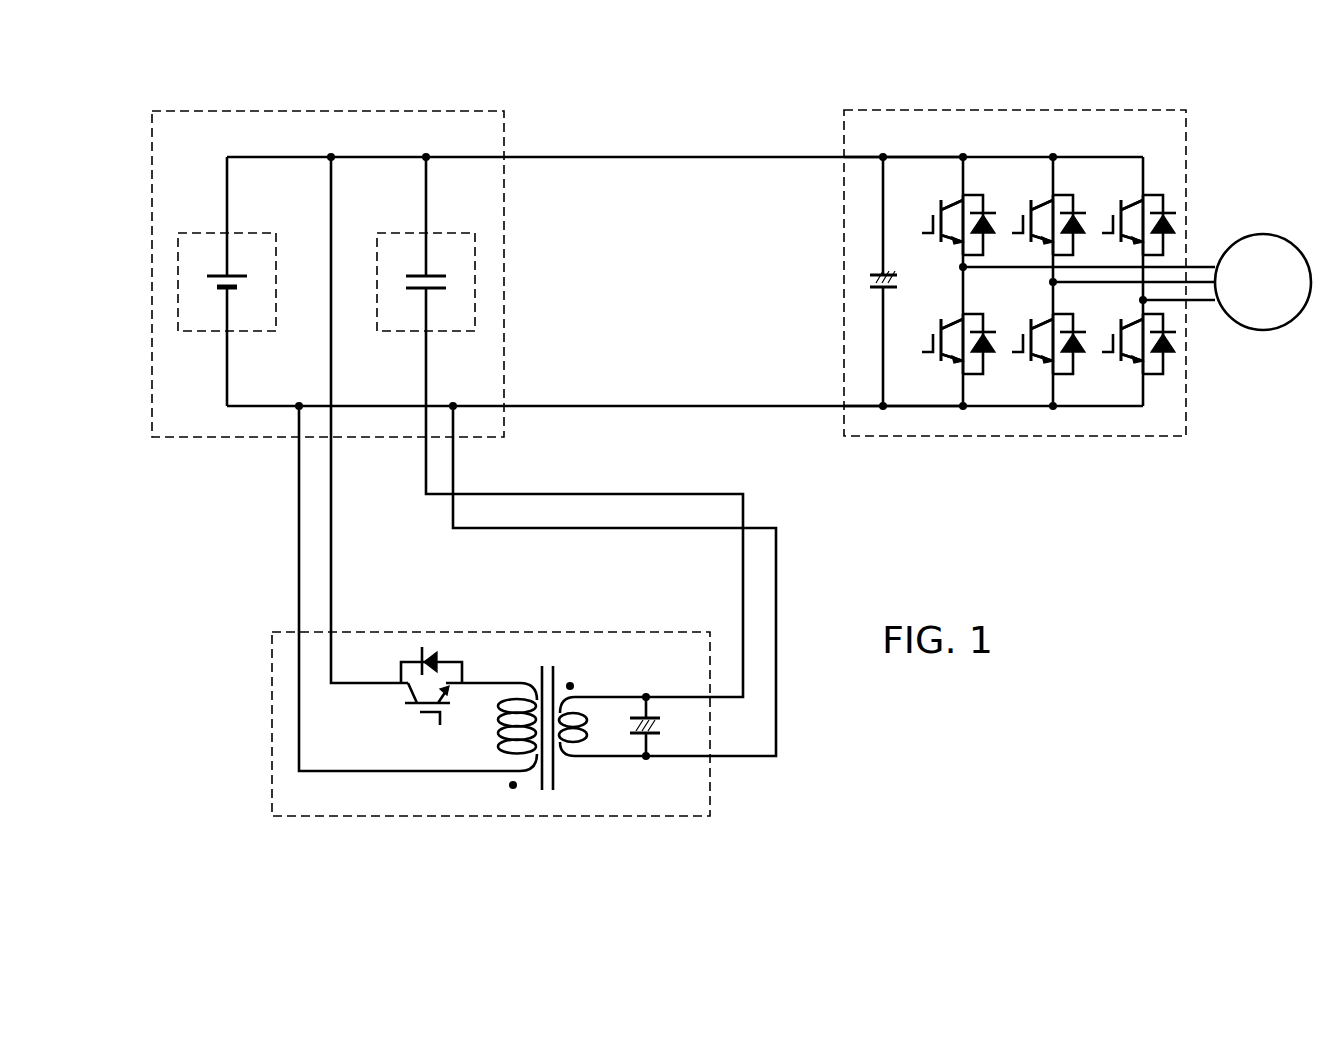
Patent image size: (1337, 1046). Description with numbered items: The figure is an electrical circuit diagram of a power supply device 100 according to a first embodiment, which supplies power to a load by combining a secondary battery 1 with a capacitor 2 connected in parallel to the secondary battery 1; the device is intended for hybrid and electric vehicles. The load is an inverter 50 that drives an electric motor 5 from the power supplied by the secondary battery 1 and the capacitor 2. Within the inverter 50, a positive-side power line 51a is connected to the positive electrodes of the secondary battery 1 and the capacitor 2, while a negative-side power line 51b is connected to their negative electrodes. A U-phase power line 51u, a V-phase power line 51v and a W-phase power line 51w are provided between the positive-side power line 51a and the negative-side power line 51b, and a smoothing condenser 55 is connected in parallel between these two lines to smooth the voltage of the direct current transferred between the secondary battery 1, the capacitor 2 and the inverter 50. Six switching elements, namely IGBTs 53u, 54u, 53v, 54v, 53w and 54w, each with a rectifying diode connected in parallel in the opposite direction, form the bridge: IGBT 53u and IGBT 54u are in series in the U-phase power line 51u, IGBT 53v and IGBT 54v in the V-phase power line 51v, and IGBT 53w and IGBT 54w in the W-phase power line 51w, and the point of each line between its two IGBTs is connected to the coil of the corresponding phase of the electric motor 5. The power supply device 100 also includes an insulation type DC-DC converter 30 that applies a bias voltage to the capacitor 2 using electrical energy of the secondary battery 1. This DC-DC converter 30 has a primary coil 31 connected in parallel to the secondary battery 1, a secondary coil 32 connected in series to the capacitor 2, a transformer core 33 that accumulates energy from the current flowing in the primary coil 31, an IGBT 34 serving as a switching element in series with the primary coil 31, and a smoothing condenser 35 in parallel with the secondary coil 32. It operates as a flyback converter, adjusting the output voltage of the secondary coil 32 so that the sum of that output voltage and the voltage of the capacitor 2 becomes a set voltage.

The power supply device 100 is at (773, 103).
The secondary battery 1 is at (196, 232).
The capacitor 2 is at (392, 232).
The electric motor 5 is at (1260, 234).
The inverter 50 is at (1176, 110).
The positive-side power line 51a is at (903, 155).
The negative-side power line 51b is at (918, 408).
The U-phase power line 51u is at (958, 170).
The V-phase power line 51v is at (1048, 170).
The W-phase power line 51w is at (1140, 170).
The IGBT 53u is at (957, 243).
The IGBT 53v is at (1048, 243).
The IGBT 53w is at (1138, 243).
The IGBT 54u is at (957, 362).
The IGBT 54v is at (1048, 362).
The IGBT 54w is at (1138, 362).
The smoothing condenser 55 is at (878, 290).
The insulation type DC-DC converter 30 is at (652, 818).
The primary coil 31 is at (525, 778).
The secondary coil 32 is at (592, 760).
The transformer core 33 is at (555, 680).
The IGBT 34 is at (408, 695).
The smoothing condenser 35 is at (648, 712).